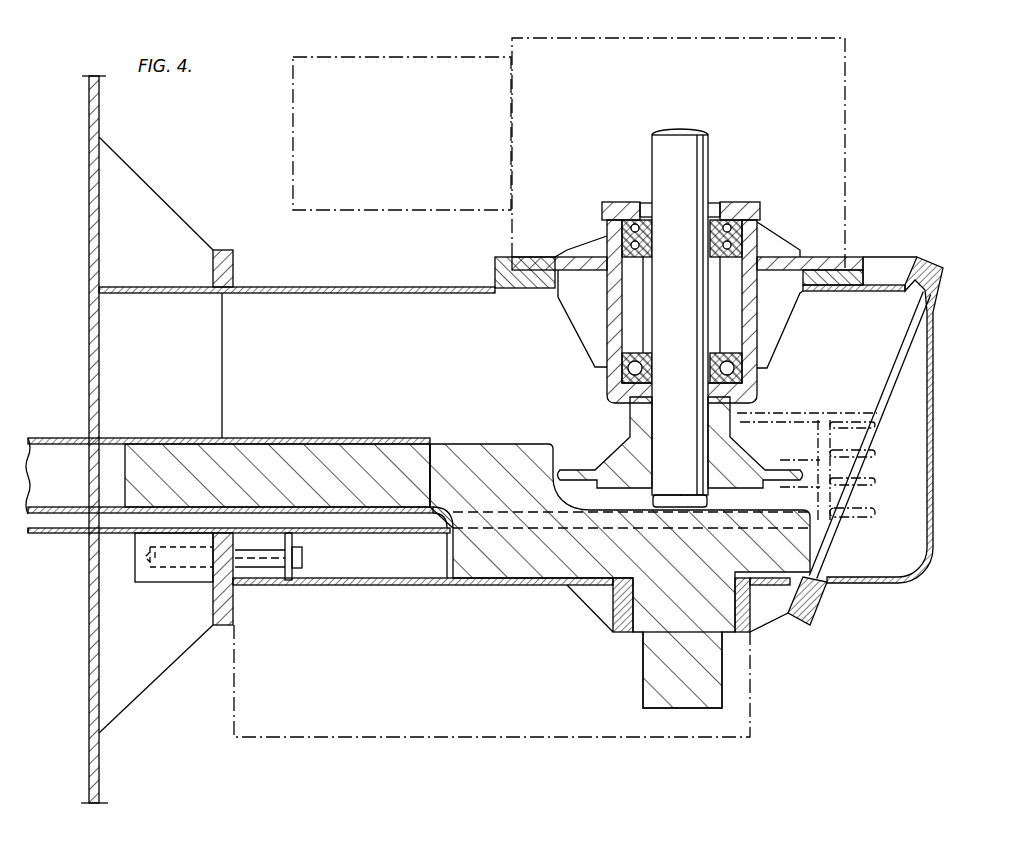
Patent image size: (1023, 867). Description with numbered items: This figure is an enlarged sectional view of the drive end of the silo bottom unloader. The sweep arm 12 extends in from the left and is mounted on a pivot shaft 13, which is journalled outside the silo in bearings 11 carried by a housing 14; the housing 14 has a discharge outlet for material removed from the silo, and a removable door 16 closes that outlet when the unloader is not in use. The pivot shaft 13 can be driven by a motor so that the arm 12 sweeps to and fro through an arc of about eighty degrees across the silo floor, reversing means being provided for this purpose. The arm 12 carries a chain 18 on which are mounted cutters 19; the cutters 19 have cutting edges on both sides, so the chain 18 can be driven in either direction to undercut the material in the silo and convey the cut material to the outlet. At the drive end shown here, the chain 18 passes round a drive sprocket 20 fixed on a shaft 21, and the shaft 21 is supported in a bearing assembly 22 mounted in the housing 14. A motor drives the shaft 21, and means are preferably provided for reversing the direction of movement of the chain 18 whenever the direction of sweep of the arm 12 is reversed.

The bearings 11 is at (748, 630).
The sweep arm 12 is at (312, 440).
The pivot shaft 13 is at (650, 688).
The housing 14 is at (510, 588).
The removable door 16 is at (933, 478).
The chain 18 is at (827, 466).
The cutters 19 is at (873, 478).
The drive sprocket 20 is at (728, 452).
The shaft 21 is at (692, 163).
The bearing assembly 22 is at (757, 235).